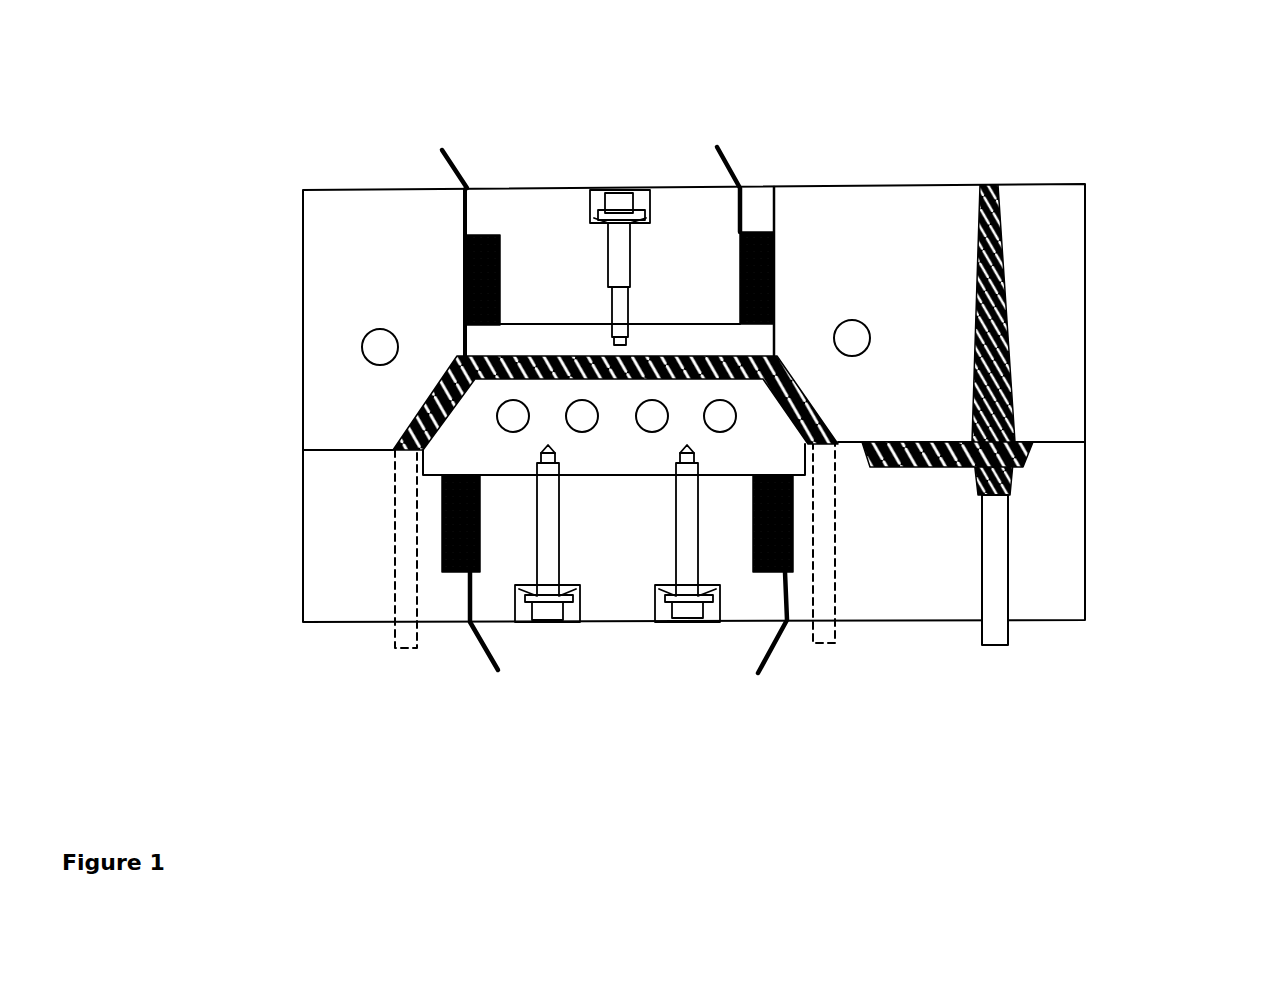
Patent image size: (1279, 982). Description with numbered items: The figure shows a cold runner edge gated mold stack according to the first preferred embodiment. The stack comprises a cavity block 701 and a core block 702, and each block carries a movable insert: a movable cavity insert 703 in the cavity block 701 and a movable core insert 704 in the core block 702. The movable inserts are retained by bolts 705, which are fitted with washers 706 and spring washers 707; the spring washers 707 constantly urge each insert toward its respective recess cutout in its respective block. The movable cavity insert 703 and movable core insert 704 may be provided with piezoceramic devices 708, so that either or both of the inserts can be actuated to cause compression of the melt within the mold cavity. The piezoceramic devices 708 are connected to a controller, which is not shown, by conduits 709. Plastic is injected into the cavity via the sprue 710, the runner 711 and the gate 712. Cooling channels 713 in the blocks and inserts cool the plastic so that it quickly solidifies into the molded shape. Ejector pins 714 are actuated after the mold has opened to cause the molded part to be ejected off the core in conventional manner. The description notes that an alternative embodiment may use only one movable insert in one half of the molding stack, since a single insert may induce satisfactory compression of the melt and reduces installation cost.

The cavity block 701 is at (333, 222).
The core block 702 is at (1057, 537).
The movable cavity insert 703 is at (540, 350).
The movable core insert 704 is at (733, 457).
The bolt 705 is at (617, 258).
The washer 706 is at (640, 210).
The spring washer 707 is at (648, 205).
The piezoceramic device 708 is at (757, 232).
The conduit 709 is at (727, 153).
The sprue 710 is at (1000, 260).
The runner 711 is at (922, 467).
The gate 712 is at (850, 445).
The cooling channel 713 is at (655, 420).
The ejector pin 714 is at (407, 612).